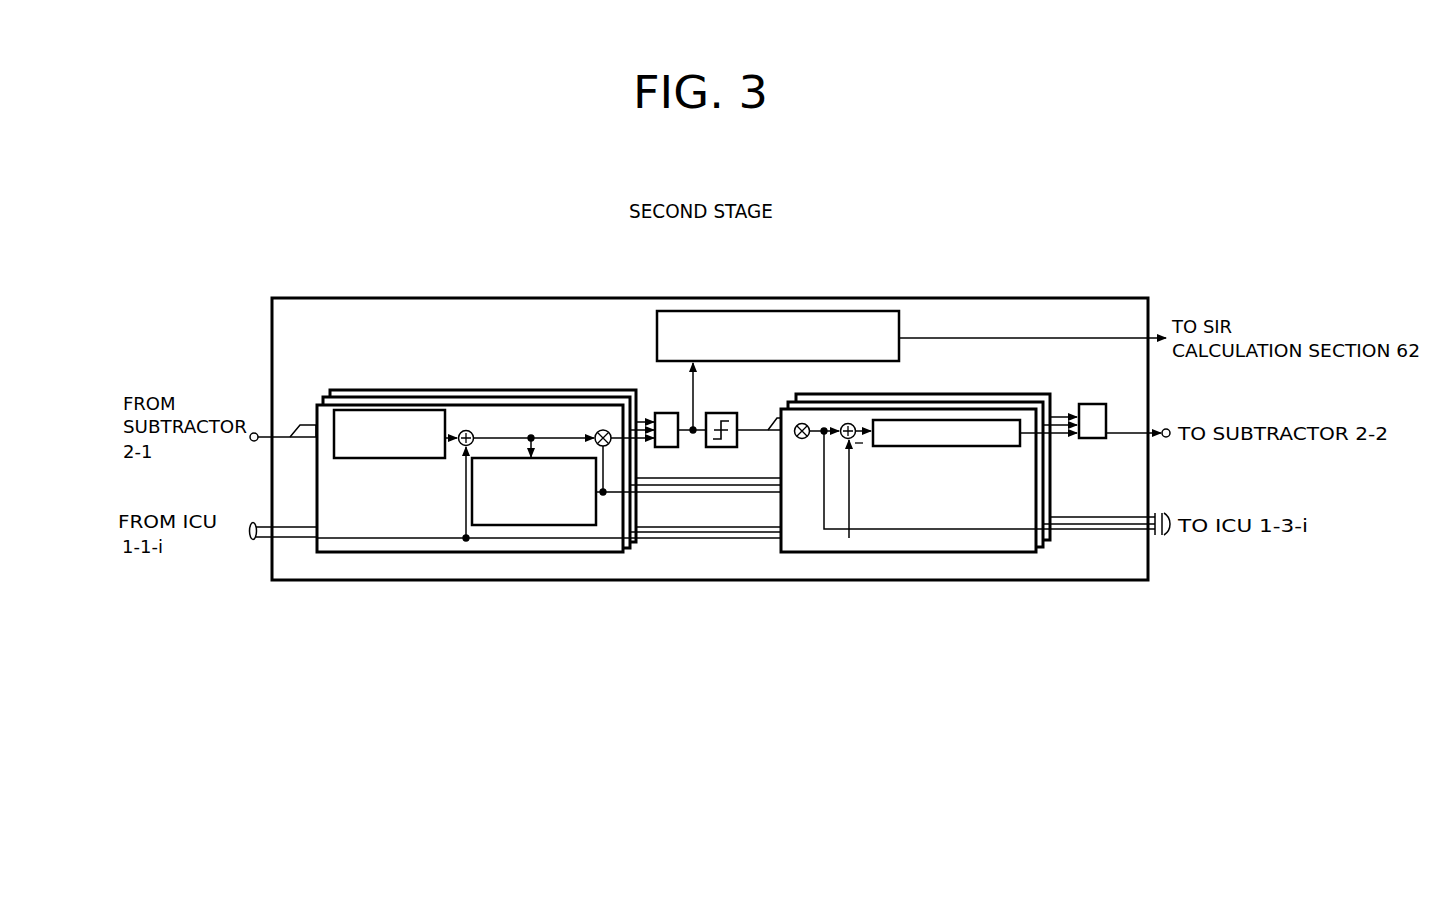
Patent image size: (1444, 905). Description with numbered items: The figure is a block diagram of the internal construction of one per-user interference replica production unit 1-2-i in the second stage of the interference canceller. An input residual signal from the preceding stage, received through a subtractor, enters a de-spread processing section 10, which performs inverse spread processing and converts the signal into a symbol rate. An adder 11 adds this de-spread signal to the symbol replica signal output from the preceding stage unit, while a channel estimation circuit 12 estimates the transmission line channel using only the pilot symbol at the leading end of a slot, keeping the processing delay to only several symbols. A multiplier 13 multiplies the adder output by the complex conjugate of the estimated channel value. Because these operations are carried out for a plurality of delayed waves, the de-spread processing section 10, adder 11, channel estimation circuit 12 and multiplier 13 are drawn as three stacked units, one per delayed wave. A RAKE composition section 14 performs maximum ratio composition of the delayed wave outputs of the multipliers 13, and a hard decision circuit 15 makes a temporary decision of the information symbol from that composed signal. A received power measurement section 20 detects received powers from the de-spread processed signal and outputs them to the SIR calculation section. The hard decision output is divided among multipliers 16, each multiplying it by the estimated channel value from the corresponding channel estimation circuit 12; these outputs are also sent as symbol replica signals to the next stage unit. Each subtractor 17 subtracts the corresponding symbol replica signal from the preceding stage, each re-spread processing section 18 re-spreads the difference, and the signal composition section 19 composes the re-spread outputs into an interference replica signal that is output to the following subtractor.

The unit 1-2-i is at (662, 581).
The de-spread processing section 10 is at (390, 410).
The adder 11 is at (468, 430).
The channel estimation circuit 12 is at (596, 505).
The multiplier 13 is at (602, 430).
The RAKE composition section 14 is at (665, 447).
The hard decision circuit 15 is at (722, 447).
The multiplier 16 is at (804, 423).
The subtractor 17 is at (850, 423).
The re-spread processing section 18 is at (944, 420).
The signal composition section 19 is at (1092, 404).
The received power measurement section 20 is at (657, 333).